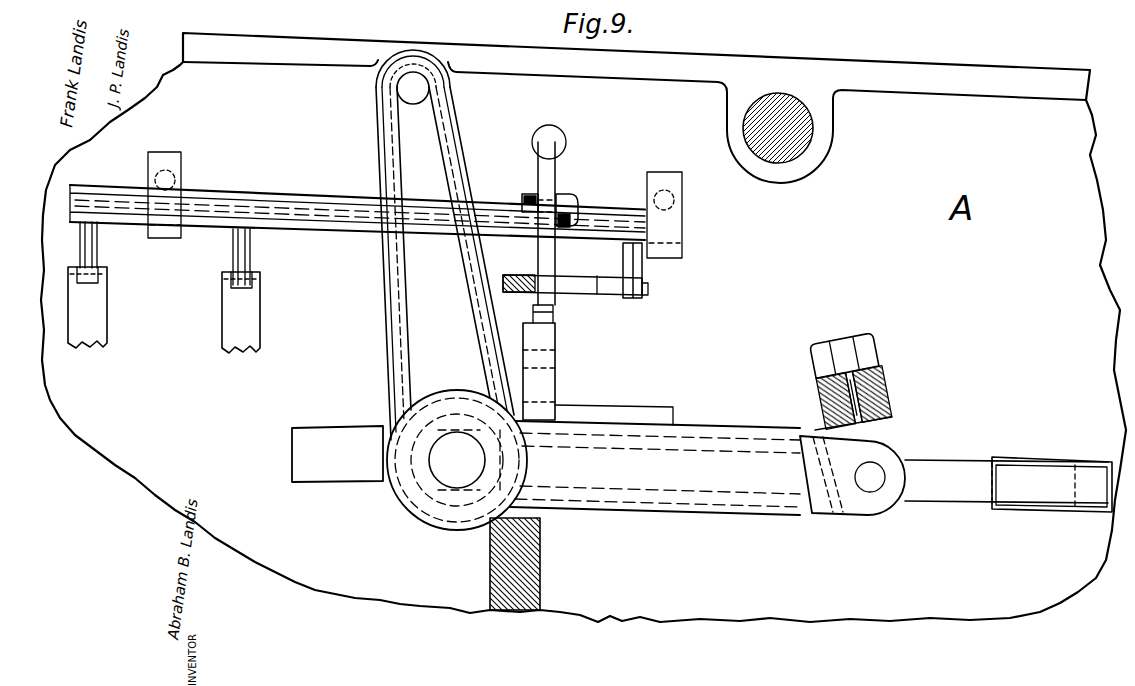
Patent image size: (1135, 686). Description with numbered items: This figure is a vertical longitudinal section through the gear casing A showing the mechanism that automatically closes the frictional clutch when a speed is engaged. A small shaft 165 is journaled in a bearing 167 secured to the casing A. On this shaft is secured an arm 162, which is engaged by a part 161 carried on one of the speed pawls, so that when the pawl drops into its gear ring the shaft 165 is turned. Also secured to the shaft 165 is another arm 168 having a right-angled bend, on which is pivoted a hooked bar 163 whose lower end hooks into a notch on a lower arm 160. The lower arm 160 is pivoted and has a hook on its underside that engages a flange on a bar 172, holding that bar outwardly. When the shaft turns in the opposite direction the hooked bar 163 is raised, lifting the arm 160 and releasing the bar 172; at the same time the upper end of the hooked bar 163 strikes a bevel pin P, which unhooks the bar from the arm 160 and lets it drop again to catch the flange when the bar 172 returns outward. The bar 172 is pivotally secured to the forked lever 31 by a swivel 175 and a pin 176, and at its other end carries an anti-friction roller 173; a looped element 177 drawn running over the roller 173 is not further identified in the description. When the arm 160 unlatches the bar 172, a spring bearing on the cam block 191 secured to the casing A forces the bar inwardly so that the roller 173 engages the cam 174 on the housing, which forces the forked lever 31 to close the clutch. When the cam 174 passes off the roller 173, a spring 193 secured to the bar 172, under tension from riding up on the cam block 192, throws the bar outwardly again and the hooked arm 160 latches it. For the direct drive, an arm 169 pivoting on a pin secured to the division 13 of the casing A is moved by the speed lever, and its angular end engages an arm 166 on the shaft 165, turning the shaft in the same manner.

The division of casing 13 is at (540, 550).
The forked lever 31 is at (893, 386).
The lower arm 160 is at (556, 385).
The pawl part 161 is at (164, 310).
The arm 162 is at (98, 245).
The hooked bar 163 is at (556, 174).
The small shaft 165 is at (297, 198).
The arm 166 is at (648, 288).
The bearing 167 is at (182, 163).
The arm with right-angled bend 168 is at (578, 203).
The arm 169 is at (558, 285).
The bar 172 is at (655, 468).
The anti-friction roller 173 is at (457, 460).
The cam 174 is at (806, 388).
The swivel 175 is at (880, 428).
The pin 176 is at (868, 480).
The belt 177 is at (388, 312).
The cam block 191 is at (337, 454).
The cam block 192 is at (1022, 460).
The spring 193 is at (1006, 481).
The bevel pin P is at (566, 140).